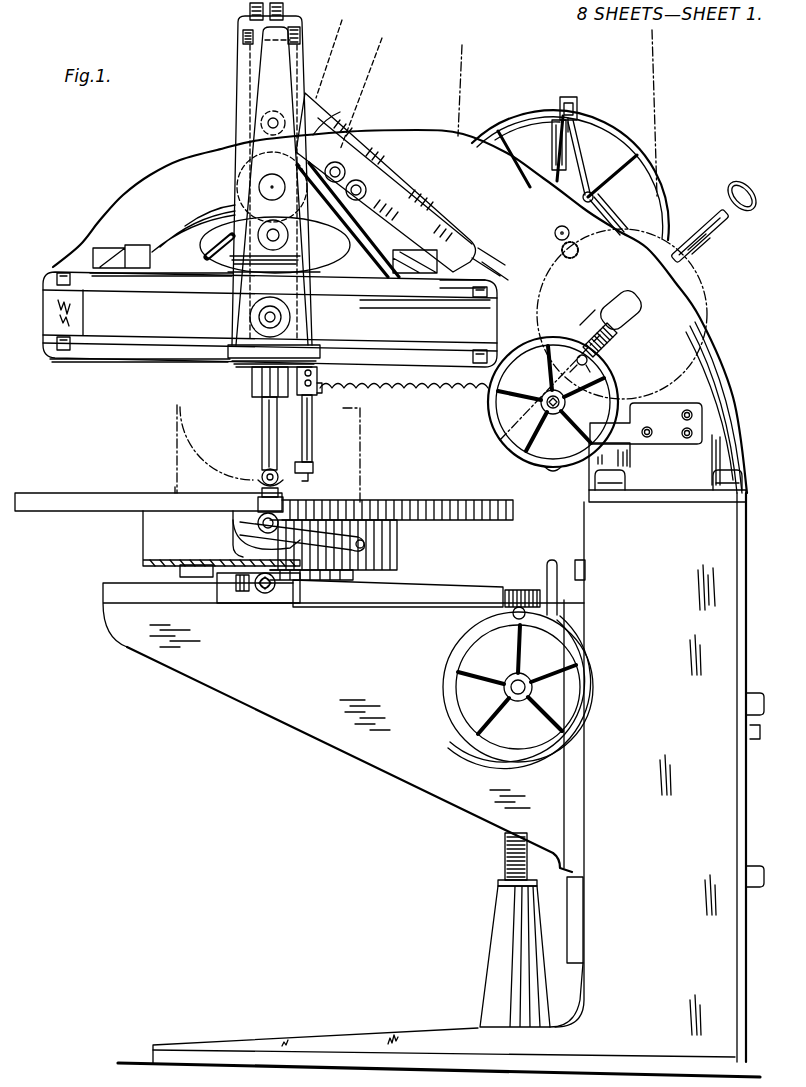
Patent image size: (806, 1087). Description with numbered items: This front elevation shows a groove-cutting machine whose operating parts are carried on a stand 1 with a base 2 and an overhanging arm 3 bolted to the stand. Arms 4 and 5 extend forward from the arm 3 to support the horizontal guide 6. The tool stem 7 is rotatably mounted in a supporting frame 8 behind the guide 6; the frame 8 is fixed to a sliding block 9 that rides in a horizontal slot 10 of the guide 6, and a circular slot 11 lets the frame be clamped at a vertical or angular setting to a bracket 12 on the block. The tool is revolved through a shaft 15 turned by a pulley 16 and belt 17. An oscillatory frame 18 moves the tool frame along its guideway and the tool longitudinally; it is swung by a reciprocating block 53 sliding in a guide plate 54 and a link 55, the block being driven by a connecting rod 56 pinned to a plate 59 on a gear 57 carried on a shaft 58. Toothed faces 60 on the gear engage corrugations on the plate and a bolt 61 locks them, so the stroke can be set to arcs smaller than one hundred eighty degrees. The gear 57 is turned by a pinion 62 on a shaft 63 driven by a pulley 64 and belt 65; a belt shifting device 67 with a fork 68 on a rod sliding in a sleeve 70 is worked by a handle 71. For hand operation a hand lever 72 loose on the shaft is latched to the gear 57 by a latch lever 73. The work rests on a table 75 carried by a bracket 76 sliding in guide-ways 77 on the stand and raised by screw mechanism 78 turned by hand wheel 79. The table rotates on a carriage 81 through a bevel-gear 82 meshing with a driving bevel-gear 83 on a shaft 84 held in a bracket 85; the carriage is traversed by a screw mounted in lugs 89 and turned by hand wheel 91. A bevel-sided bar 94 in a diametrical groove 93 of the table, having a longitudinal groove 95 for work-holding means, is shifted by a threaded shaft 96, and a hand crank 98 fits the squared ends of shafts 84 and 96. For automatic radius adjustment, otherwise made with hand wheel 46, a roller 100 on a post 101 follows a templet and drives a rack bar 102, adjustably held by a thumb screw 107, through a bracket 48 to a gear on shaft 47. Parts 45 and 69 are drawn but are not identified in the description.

The stand 1 is at (659, 692).
The base 2 is at (367, 1042).
The overhanging arm 3 is at (410, 131).
The arm 4 is at (83, 258).
The arm 5 is at (412, 305).
The guide 6 is at (177, 293).
The tool stem 7 is at (262, 426).
The supporting frame 8 is at (262, 90).
The sliding block 9 is at (236, 314).
The horizontal slot 10 is at (352, 292).
The circular slot 11 is at (220, 252).
The bracket 12 is at (343, 265).
The shaft 15 is at (300, 340).
The pulley 16 is at (268, 320).
The belt 17 is at (366, 100).
The oscillatory frame 18 is at (240, 64).
The clamp block 45 is at (243, 37).
The hand wheel 46 is at (490, 422).
The shaft 47 is at (548, 405).
The bracket 48 is at (660, 436).
The reciprocating block 53 is at (360, 170).
The guide plate 54 is at (408, 198).
The link 55 is at (333, 112).
The connecting rod 56 is at (510, 312).
The gear 57 is at (705, 296).
The shaft 58 is at (625, 318).
The plate 59 is at (587, 322).
The corrugated or toothed faces 60 is at (616, 348).
The bolt 61 is at (612, 371).
The pinion 62 is at (562, 250).
The shaft 63 is at (555, 230).
The pulley 64 is at (640, 172).
The belt 65 is at (460, 108).
The belt shifting device 67 is at (546, 139).
The belt engaging fork 68 is at (528, 110).
The bolt 69 is at (578, 110).
The sleeve 70 is at (576, 98).
The operating handle 71 is at (578, 194).
The hand lever 72 is at (720, 240).
The latch lever 73 is at (700, 234).
The table 75 is at (68, 505).
The bracket 76 is at (245, 703).
The guide-ways 77 is at (584, 890).
The screw mechanism 78 is at (504, 860).
The hand wheel 79 is at (590, 666).
The carriage 81 is at (405, 590).
The bevel-gear 82 is at (158, 565).
The driving bevel-gear 83 is at (310, 584).
The shaft 84 is at (265, 596).
The bracket 85 is at (242, 592).
The lugs 89 is at (520, 590).
The hand wheel 91 is at (566, 576).
The groove 93 is at (250, 522).
The bar 94 is at (284, 503).
The groove 95 is at (262, 495).
The threaded shaft 96 is at (262, 533).
The hand crank 98 is at (372, 544).
The roller 100 is at (314, 468).
The post 101 is at (313, 442).
The rack bar 102 is at (404, 398).
The thumb screw 107 is at (322, 388).